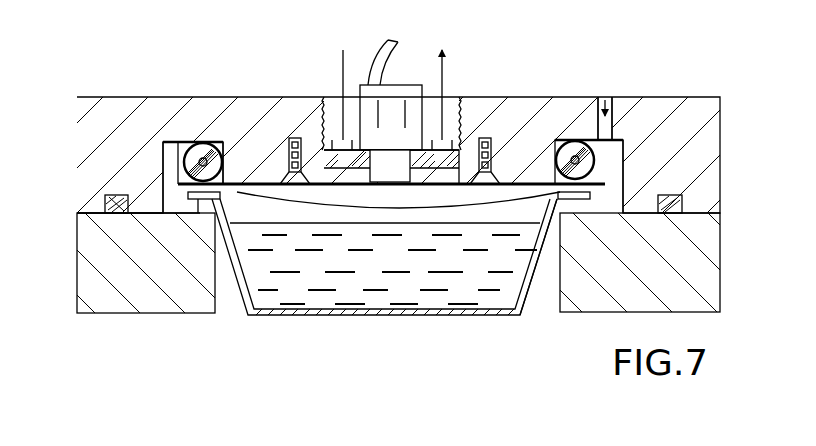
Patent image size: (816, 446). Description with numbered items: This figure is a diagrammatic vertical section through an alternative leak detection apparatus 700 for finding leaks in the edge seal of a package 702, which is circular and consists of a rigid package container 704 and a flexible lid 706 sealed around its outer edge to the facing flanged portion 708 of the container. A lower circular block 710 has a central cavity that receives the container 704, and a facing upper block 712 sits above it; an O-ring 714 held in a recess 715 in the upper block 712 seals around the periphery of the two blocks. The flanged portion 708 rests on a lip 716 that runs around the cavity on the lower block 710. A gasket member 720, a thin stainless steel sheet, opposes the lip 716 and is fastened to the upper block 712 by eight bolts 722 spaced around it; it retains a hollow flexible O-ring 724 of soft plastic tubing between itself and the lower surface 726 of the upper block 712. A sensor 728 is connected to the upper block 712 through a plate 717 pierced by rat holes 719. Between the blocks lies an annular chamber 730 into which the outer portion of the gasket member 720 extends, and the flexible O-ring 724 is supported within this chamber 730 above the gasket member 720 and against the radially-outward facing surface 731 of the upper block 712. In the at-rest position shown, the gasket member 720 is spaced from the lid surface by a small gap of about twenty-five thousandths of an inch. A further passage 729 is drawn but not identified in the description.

The leak detection apparatus 700 is at (594, 49).
The package 702 is at (328, 322).
The package container 704 is at (522, 305).
The flexible lid 706 is at (330, 207).
The flanged portion 708 is at (212, 200).
The lower circular block 710 is at (77, 278).
The upper block 712 is at (77, 137).
The O-ring 714 is at (105, 200).
The recess 715 is at (112, 195).
The lip 716 is at (165, 208).
The plate 717 is at (457, 135).
The rat holes 719 is at (445, 163).
The gasket member 720 is at (168, 143).
The bolts 722 is at (292, 137).
The hollow flexible O-ring 724 is at (203, 143).
The lower surface 726 is at (178, 143).
The sensor 728 is at (363, 85).
The vent passage 729 is at (608, 100).
The annular chamber 730 is at (170, 150).
The radially-outward facing surface 731 is at (213, 143).